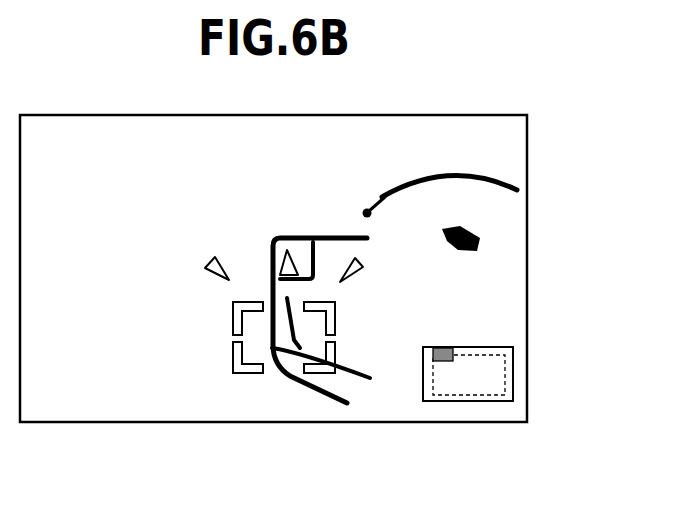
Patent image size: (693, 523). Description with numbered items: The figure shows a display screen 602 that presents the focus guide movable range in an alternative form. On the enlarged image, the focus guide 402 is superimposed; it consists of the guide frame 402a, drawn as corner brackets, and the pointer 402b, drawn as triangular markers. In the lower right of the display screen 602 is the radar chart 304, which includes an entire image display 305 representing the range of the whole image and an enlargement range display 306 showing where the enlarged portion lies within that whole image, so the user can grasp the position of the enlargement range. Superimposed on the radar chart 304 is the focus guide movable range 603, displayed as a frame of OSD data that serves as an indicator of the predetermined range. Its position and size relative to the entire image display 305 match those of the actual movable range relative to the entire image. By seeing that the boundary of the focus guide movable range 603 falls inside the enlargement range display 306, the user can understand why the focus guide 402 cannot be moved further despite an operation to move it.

The display screen 602 is at (412, 115).
The focus guide movable range 603 is at (458, 401).
The radar chart 304 is at (548, 348).
The entire image display 305 is at (505, 375).
The enlargement range display 306 is at (445, 347).
The focus guide 402 is at (223, 383).
The guide frame 402a is at (242, 380).
The pointer 402b is at (217, 282).